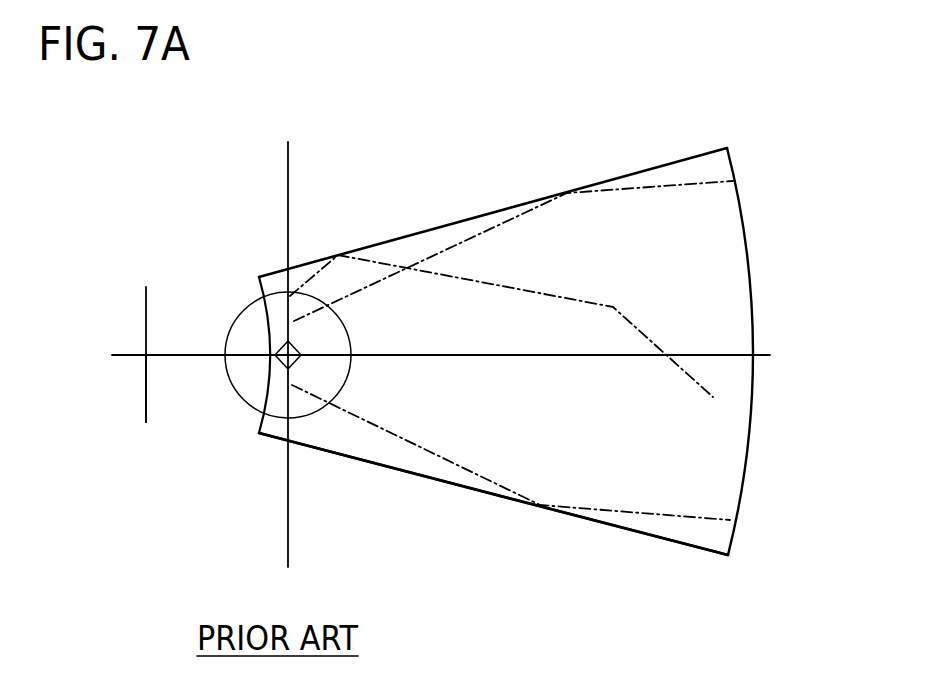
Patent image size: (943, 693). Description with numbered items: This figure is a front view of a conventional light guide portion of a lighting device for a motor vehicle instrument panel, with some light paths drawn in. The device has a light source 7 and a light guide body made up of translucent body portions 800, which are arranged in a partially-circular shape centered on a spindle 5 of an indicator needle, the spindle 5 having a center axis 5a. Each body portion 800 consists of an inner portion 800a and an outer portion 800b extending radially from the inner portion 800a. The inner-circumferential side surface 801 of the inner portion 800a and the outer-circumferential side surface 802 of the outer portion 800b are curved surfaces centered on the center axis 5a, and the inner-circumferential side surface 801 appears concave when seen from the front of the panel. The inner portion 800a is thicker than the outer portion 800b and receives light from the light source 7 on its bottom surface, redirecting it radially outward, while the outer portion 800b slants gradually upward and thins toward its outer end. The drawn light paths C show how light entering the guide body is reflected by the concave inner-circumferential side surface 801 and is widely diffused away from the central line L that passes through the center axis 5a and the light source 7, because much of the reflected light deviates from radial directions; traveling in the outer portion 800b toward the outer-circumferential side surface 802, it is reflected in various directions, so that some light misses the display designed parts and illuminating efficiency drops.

The spindle 5 is at (135, 345).
The center axis 5a is at (143, 362).
The light source 7 is at (298, 342).
The body portion 800 is at (418, 229).
The inner portion 800a is at (272, 430).
The outer portion 800b is at (488, 452).
The inner-circumferential side surface 801 is at (260, 283).
The outer-circumferential side surface 802 is at (745, 237).
The light ray (chief ray) C is at (648, 128).
The central line L is at (763, 353).